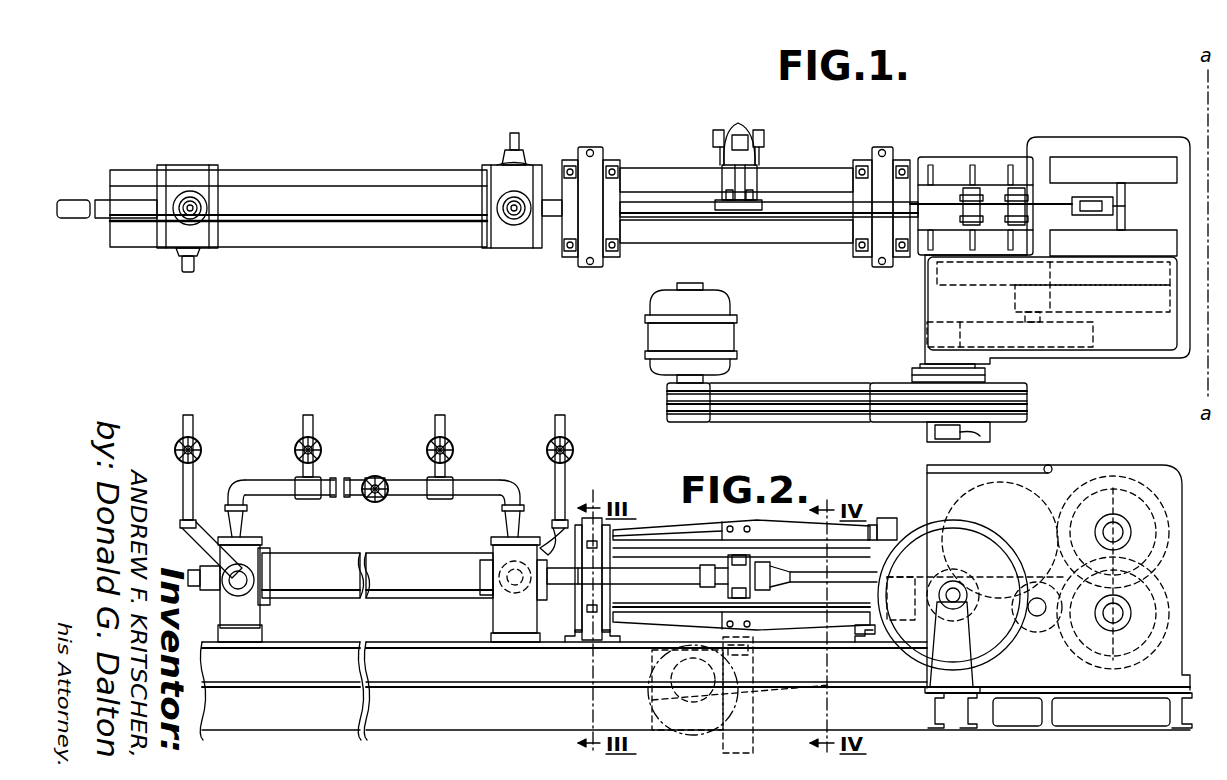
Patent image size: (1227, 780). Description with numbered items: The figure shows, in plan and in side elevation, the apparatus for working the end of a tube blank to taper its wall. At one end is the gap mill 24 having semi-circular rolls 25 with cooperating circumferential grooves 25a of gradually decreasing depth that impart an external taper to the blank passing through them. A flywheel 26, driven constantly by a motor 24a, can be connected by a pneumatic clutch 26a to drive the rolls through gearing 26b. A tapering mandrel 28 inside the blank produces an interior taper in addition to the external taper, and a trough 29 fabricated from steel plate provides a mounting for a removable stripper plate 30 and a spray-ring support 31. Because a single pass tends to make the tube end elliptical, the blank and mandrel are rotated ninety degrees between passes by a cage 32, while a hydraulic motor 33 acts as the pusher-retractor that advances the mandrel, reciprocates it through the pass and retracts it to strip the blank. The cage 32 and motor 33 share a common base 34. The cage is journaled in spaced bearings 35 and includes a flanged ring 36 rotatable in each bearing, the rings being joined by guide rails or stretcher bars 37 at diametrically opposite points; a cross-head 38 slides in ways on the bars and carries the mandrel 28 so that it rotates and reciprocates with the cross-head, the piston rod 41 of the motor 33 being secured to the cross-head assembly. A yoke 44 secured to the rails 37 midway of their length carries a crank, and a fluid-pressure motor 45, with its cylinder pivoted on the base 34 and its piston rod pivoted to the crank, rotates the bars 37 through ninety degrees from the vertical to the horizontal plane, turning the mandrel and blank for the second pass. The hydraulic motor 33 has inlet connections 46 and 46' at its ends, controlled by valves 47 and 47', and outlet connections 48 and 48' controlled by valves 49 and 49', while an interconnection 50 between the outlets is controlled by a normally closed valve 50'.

In FIG. 1, the gap mill 24 is at (1150, 343).
In FIG. 2, the gap mill 24 is at (1100, 465).
In FIG. 1, the motor 24a is at (705, 349).
In FIG. 1, the semi-circular rolls 25 is at (1088, 197).
In FIG. 2, the semi-circular rolls 25 is at (1110, 505).
In FIG. 1, the circumferential grooves 25a is at (1125, 206).
In FIG. 1, the flywheel 26 is at (888, 384).
In FIG. 2, the flywheel 26 is at (963, 528).
In FIG. 1, the pneumatic clutch 26a is at (988, 377).
In FIG. 1, the gearing 26b is at (1020, 285).
In FIG. 2, the gearing 26b is at (1037, 632).
In FIG. 1, the tapering mandrel 28 is at (1040, 202).
In FIG. 2, the tapering mandrel 28 is at (815, 560).
In FIG. 1, the trough 29 is at (938, 157).
In FIG. 1, the stripper plate 30 is at (1016, 193).
In FIG. 1, the spray-ring support 31 is at (972, 195).
In FIG. 1, the cage 32 is at (797, 163).
In FIG. 2, the cage 32 is at (633, 522).
In FIG. 1, the hydraulic motor 33 is at (346, 186).
In FIG. 2, the hydraulic motor 33 is at (390, 598).
In FIG. 1, the base 34 is at (366, 247).
In FIG. 2, the base 34 is at (418, 675).
In FIG. 1, the bearings 35 is at (592, 160).
In FIG. 2, the bearings 35 is at (592, 518).
In FIG. 1, the flanged ring 36 is at (570, 160).
In FIG. 2, the flanged ring 36 is at (572, 632).
In FIG. 1, the guide rails or stretcher bars 37 is at (636, 200).
In FIG. 2, the guide rails or stretcher bars 37 is at (688, 535).
In FIG. 2, the cross-head 38 is at (745, 582).
In FIG. 1, the piston rod 41 is at (553, 214).
In FIG. 2, the piston rod 41 is at (568, 575).
In FIG. 1, the yoke 44 is at (722, 180).
In FIG. 1, the fluid-pressure motor 45 is at (740, 126).
In FIG. 2, the fluid-pressure motor 45 is at (754, 714).
In FIG. 1, the inlet connection 46 is at (166, 262).
In FIG. 2, the inlet connection 46 is at (273, 567).
In FIG. 1, the inlet connection 46' is at (493, 138).
In FIG. 2, the inlet connection 46' is at (480, 561).
In FIG. 2, the control valve 47 is at (208, 496).
In FIG. 2, the control valve 47' is at (545, 485).
In FIG. 1, the outlet connection 48 is at (204, 180).
In FIG. 2, the outlet connection 48 is at (240, 574).
In FIG. 1, the outlet connection 48' is at (502, 232).
In FIG. 2, the outlet connection 48' is at (504, 573).
In FIG. 2, the valve 49 is at (326, 457).
In FIG. 2, the valve 49' is at (422, 457).
In FIG. 2, the interconnection 50 is at (374, 507).
In FIG. 2, the valve 50' is at (389, 501).